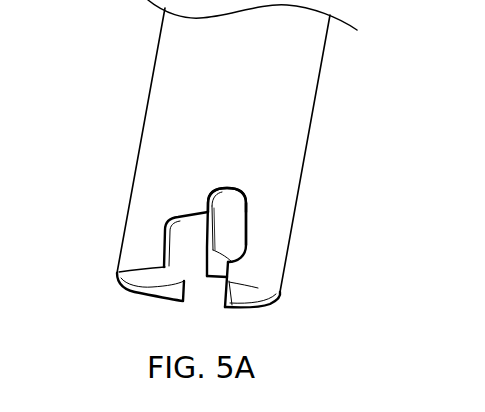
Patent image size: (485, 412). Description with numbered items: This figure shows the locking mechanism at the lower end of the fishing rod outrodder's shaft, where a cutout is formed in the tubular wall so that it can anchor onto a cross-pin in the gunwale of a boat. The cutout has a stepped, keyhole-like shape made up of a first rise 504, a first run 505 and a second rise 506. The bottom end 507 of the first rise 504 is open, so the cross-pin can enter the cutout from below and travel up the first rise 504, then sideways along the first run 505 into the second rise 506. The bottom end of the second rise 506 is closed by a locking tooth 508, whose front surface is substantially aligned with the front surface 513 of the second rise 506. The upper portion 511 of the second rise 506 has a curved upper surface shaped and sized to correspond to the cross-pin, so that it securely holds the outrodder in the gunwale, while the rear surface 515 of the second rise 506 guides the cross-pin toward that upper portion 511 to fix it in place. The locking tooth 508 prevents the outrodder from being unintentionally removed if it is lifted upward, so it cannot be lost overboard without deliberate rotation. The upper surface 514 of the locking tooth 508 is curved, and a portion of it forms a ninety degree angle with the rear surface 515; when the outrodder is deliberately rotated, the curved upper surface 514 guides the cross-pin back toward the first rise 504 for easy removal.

The front surface of the second rise 513 is at (210, 193).
The upper portion of the second rise 511 is at (238, 192).
The second rise 506 is at (226, 210).
The rear surface of the second rise 515 is at (249, 234).
The upper surface of the locking tooth 514 is at (216, 270).
The first run 505 is at (200, 240).
The first rise 504 is at (181, 255).
The bottom end of the first rise 507 is at (181, 271).
The locking tooth 508 is at (238, 270).